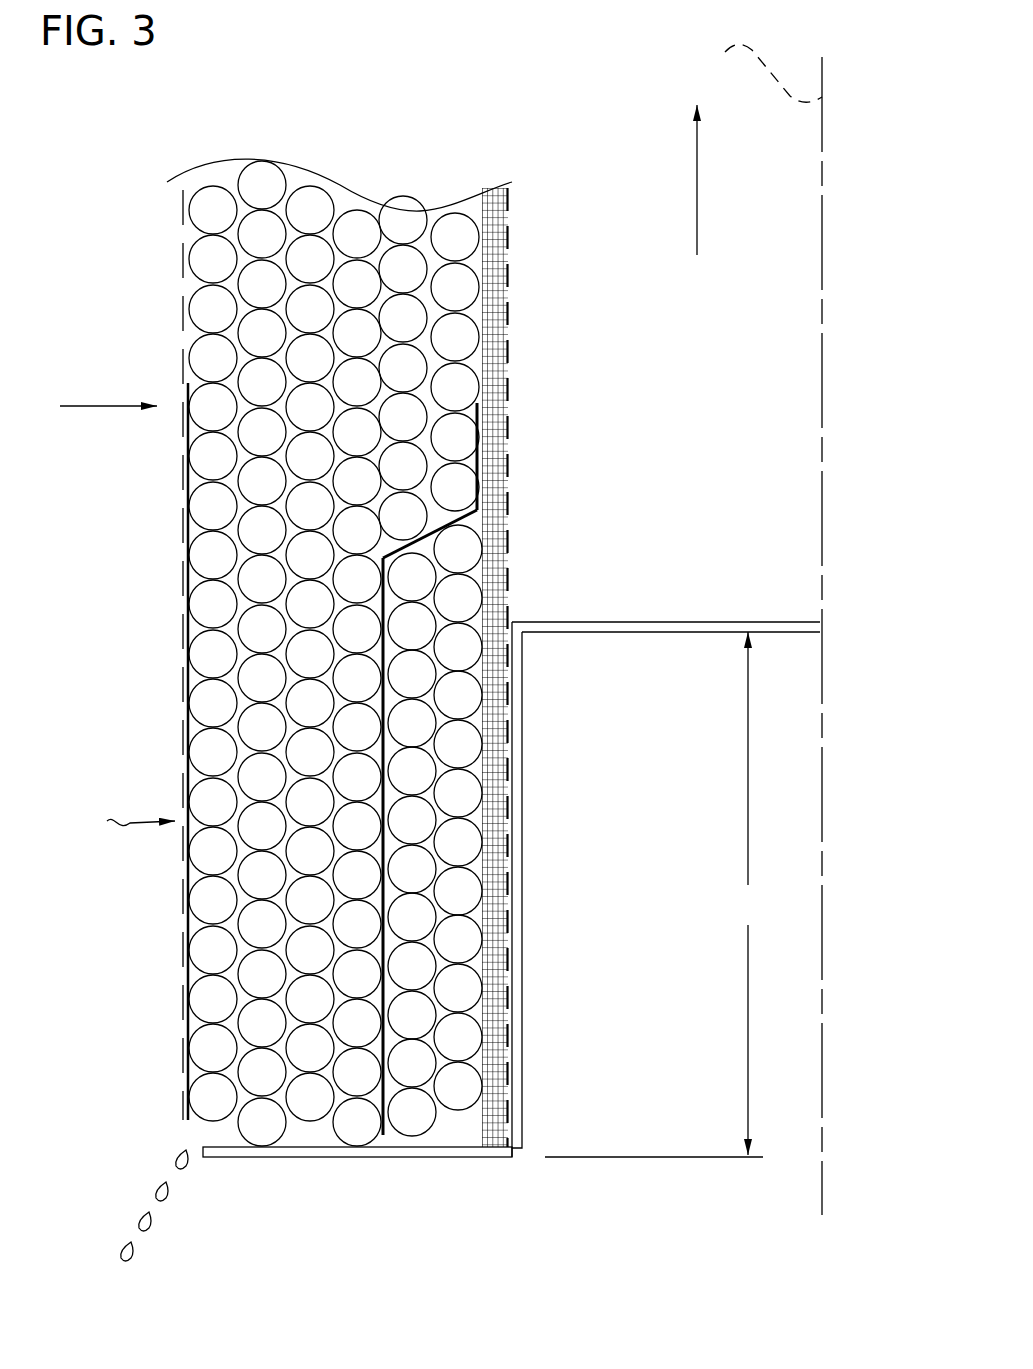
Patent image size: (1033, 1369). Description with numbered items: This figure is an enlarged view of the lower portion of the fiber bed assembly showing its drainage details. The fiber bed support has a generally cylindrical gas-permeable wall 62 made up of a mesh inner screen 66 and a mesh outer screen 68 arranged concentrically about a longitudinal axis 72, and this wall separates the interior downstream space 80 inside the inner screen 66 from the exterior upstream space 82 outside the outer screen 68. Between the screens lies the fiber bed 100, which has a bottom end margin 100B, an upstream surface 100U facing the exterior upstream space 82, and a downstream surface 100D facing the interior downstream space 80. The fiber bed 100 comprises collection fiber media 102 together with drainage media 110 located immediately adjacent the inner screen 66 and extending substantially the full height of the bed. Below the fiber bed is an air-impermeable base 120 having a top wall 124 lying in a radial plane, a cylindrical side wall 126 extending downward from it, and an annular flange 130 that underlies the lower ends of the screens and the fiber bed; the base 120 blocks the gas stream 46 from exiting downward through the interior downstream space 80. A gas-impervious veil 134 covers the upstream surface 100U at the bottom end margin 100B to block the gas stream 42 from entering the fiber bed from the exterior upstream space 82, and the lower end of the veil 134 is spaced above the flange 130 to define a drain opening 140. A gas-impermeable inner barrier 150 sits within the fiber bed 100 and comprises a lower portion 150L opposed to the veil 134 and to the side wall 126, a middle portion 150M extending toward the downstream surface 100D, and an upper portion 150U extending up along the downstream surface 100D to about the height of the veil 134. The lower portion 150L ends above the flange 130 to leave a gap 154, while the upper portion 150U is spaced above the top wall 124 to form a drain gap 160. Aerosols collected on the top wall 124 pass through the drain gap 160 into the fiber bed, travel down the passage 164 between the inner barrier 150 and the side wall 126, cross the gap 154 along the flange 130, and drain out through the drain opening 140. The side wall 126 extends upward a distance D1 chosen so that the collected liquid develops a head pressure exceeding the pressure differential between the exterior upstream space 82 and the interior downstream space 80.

The gas stream 42 is at (110, 407).
The gas stream 46 is at (697, 190).
The gas-permeable wall 62 is at (123, 825).
The inner screen 66 is at (507, 267).
The outer screen 68 is at (183, 258).
The longitudinal axis 72 is at (757, 69).
The interior downstream space 80 is at (727, 470).
The exterior upstream space 82 is at (92, 604).
The fiber bed 100 is at (347, 605).
The bottom end margin 100B is at (258, 671).
The downstream surface 100D is at (497, 305).
The upstream surface 100U is at (183, 325).
The collection fiber media 102 is at (262, 188).
The drainage media 110 is at (497, 355).
The base 120 is at (666, 841).
The top wall 124 is at (617, 632).
The side wall 126 is at (517, 1088).
The annular flange 130 is at (333, 1157).
The veil 134 is at (183, 1021).
The drain opening 140 is at (192, 1135).
The inner barrier 150 is at (374, 814).
The upper portion 150U is at (480, 448).
The middle portion 150M is at (433, 558).
The lower portion 150L is at (433, 860).
The gap 154 is at (383, 1140).
The drain gap 160 is at (473, 522).
The passage 164 is at (460, 783).
The distance D1 is at (747, 893).